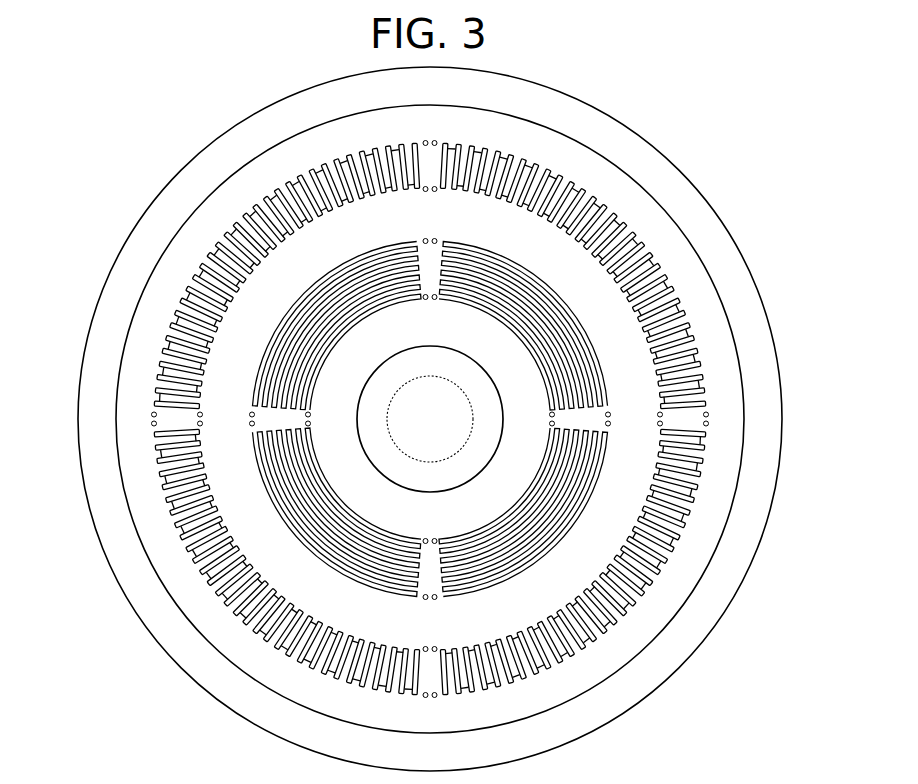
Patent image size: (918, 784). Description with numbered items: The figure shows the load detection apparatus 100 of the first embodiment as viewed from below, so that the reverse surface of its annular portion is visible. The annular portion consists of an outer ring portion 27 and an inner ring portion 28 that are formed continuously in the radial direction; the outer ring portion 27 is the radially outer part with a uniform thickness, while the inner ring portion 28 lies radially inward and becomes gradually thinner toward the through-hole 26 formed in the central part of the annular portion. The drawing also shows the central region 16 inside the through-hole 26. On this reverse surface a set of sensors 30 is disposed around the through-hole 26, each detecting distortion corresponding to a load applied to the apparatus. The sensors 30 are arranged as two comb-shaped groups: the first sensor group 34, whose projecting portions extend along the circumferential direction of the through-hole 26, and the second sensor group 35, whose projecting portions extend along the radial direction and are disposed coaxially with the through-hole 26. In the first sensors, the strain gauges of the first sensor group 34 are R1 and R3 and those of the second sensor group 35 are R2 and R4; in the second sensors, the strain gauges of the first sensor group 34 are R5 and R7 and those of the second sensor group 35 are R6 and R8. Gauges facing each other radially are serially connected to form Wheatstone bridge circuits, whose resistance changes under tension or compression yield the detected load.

The load detection apparatus 100 is at (772, 303).
The outer ring portion 27 is at (120, 337).
The inner ring portion 28 is at (240, 343).
The through-hole 26 is at (432, 352).
The center hole / stem 16 is at (428, 463).
The sensors 30 is at (430, 424).
The first sensor group 34 is at (430, 424).
The second sensor group 35 is at (431, 423).
The strain gauge R1 is at (639, 245).
The strain gauge R2 is at (227, 246).
The strain gauge R3 is at (220, 598).
The strain gauge R4 is at (633, 596).
The strain gauge R5 is at (520, 338).
The strain gauge R6 is at (330, 236).
The strain gauge R7 is at (307, 557).
The strain gauge R8 is at (537, 683).